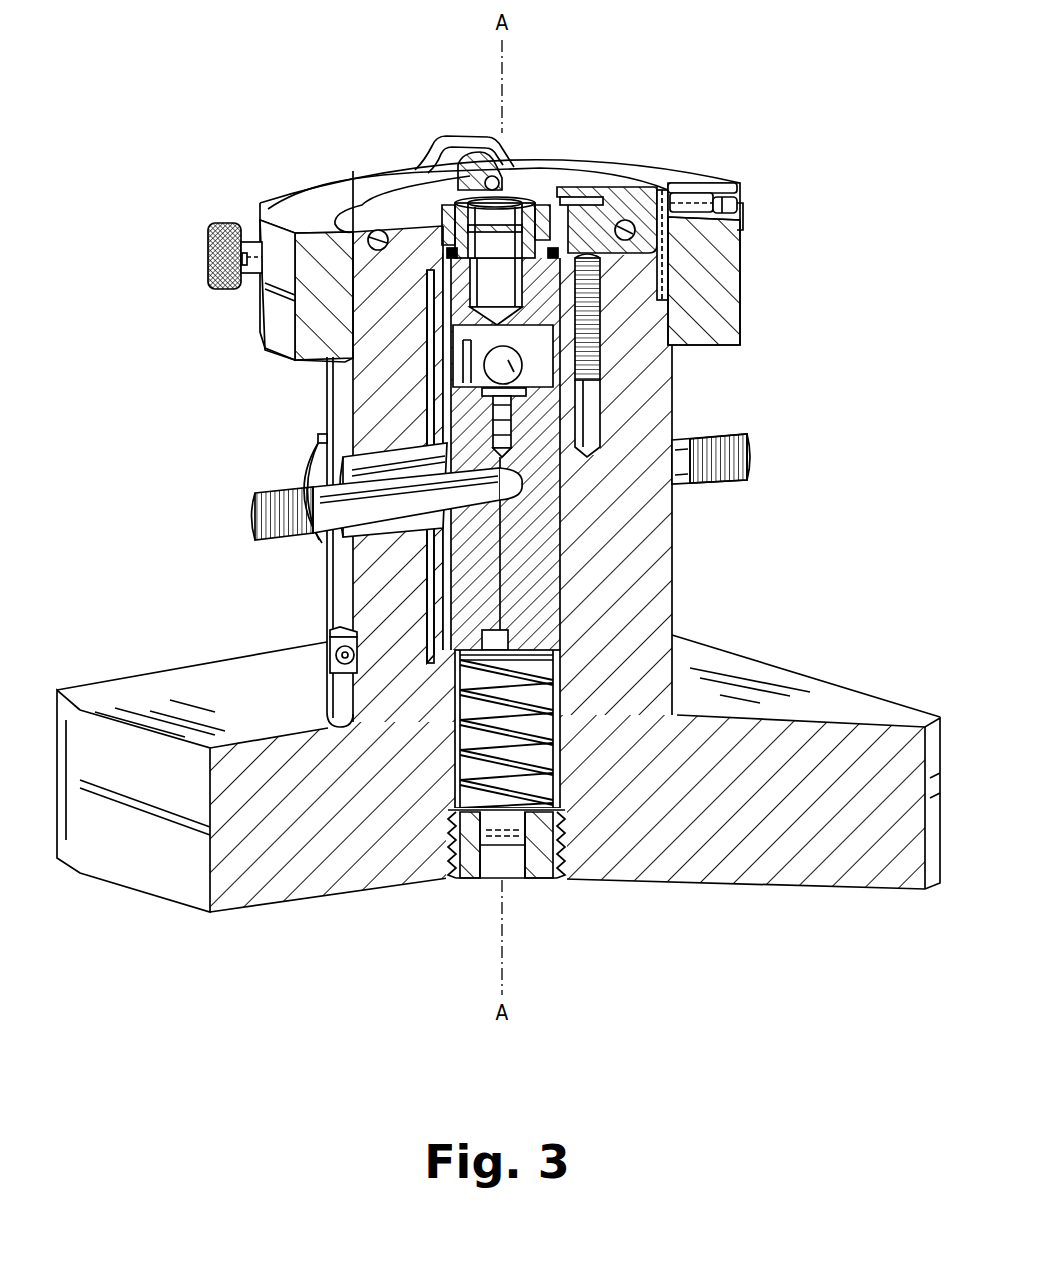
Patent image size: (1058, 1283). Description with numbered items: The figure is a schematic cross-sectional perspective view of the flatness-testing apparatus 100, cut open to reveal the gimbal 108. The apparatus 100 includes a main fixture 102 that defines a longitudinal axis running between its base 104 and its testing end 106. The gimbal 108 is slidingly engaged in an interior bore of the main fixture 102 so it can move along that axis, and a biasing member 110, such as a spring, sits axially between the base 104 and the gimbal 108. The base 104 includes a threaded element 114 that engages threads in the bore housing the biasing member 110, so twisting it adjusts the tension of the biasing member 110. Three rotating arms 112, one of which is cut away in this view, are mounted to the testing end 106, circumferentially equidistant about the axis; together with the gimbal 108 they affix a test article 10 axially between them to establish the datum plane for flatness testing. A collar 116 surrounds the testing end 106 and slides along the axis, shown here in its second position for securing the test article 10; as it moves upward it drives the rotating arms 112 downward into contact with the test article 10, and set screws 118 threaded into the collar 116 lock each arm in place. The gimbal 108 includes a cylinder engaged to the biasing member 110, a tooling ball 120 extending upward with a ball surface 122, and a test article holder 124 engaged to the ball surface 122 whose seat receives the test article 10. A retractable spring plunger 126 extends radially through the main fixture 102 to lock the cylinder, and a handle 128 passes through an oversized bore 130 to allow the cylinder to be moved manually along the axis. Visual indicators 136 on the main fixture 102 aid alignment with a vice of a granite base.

The test article 10 is at (527, 203).
The apparatus 100 is at (860, 88).
The main fixture 102 is at (653, 573).
The base 104 is at (866, 850).
The testing end 106 is at (845, 320).
The gimbal 108 is at (447, 412).
The biasing member 110 is at (528, 750).
The rotating arms 112 is at (642, 173).
The threaded element 114 is at (507, 850).
The collar 116 is at (735, 277).
The set screws 118 is at (750, 207).
The tooling ball 120 is at (550, 352).
The ball surface 122 is at (452, 125).
The test article holder 124 is at (545, 311).
The retractable spring plunger 126 is at (302, 457).
The handle 128 is at (262, 515).
The oversized bore 130 is at (380, 537).
The visual indicators 136 is at (340, 655).